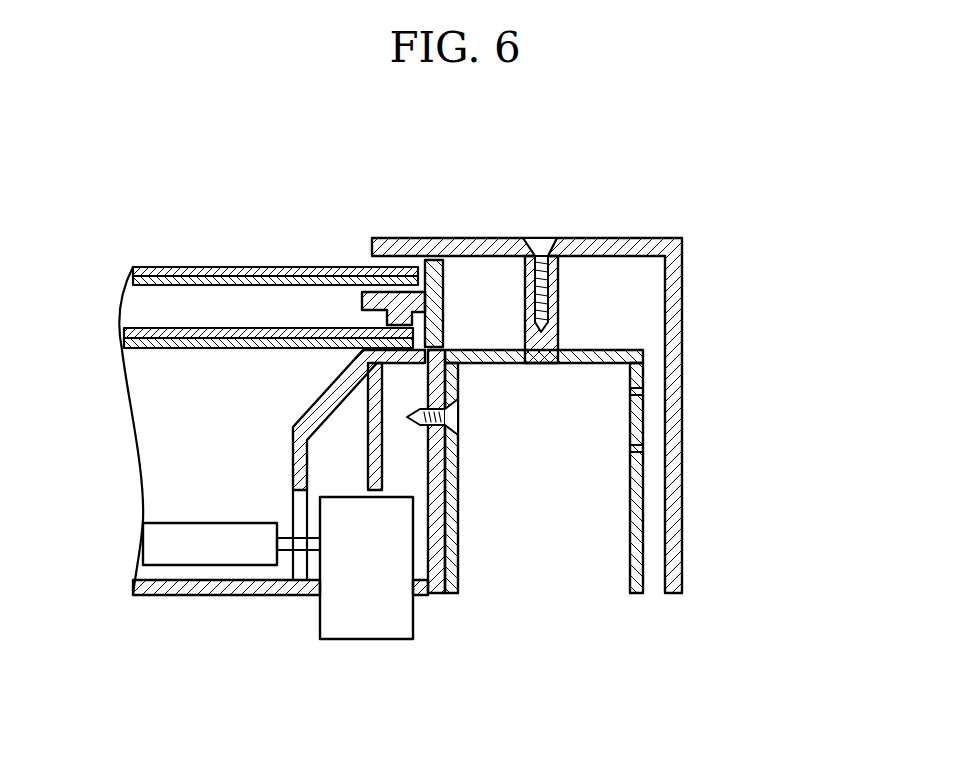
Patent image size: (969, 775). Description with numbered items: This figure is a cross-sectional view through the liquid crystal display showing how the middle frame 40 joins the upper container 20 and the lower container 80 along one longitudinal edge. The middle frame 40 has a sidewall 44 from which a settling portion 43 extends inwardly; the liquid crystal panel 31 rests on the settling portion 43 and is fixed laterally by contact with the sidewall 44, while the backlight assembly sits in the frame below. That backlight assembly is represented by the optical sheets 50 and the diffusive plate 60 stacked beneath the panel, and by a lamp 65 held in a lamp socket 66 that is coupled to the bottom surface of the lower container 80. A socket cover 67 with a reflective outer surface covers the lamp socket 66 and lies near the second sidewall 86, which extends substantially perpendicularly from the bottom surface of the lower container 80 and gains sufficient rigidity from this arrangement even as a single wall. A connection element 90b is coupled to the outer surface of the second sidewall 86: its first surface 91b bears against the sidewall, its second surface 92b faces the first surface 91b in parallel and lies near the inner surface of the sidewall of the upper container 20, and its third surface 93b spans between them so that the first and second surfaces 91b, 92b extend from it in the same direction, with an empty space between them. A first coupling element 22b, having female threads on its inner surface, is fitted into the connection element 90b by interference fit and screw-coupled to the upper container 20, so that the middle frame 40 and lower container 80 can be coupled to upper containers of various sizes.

The upper container 20 is at (622, 250).
The first coupling element 22b is at (563, 258).
The liquid crystal panel 31 is at (172, 262).
The middle frame 40 is at (372, 146).
The settling portion 43 is at (366, 300).
The sidewall 44 is at (434, 265).
The optical sheet 50 is at (125, 330).
The diffusive plate 60 is at (125, 346).
The lamp 65 is at (156, 545).
The lamp socket 66 is at (368, 622).
The socket cover 67 is at (300, 447).
The lower container 80 is at (242, 605).
The second sidewall 86 is at (437, 530).
The connection element 90b is at (813, 345).
The first surface 91b is at (455, 447).
The second surface 92b is at (637, 543).
The third surface 93b is at (600, 349).